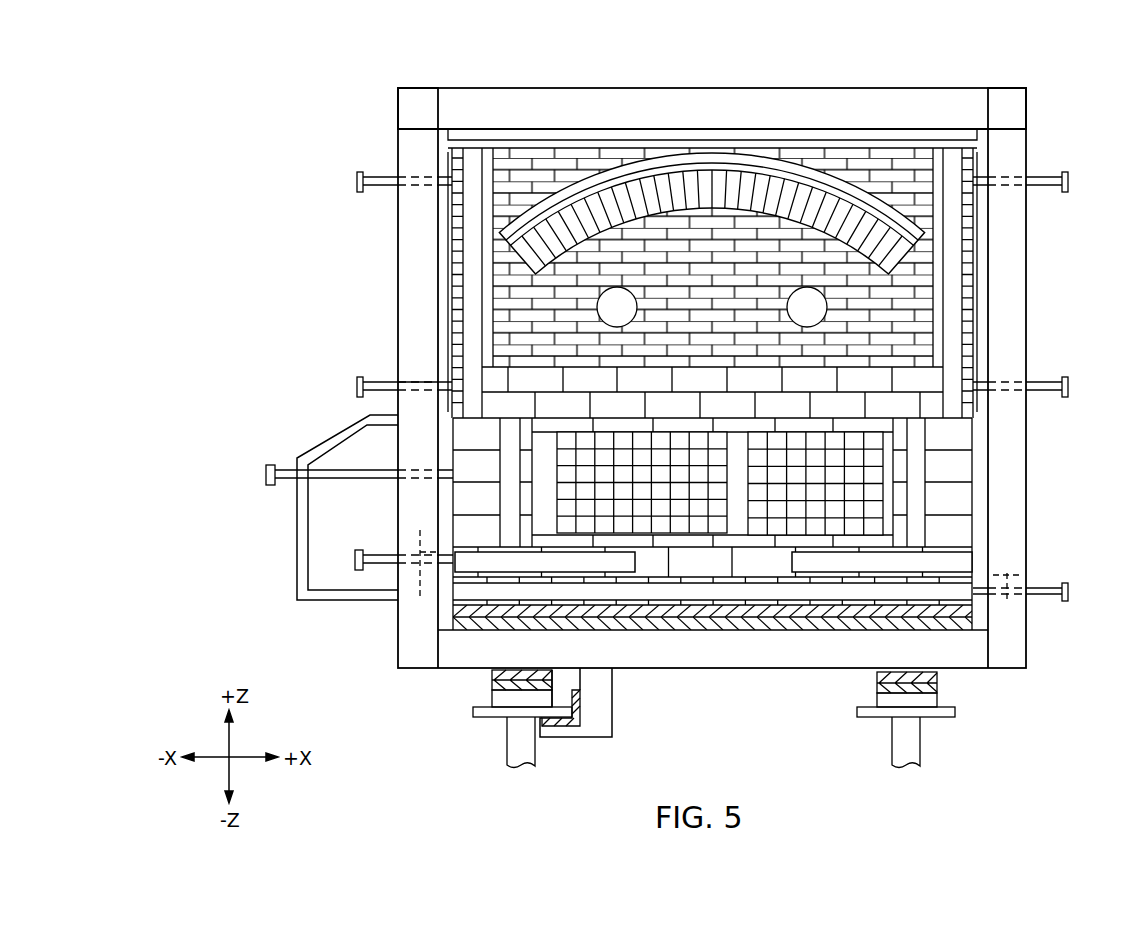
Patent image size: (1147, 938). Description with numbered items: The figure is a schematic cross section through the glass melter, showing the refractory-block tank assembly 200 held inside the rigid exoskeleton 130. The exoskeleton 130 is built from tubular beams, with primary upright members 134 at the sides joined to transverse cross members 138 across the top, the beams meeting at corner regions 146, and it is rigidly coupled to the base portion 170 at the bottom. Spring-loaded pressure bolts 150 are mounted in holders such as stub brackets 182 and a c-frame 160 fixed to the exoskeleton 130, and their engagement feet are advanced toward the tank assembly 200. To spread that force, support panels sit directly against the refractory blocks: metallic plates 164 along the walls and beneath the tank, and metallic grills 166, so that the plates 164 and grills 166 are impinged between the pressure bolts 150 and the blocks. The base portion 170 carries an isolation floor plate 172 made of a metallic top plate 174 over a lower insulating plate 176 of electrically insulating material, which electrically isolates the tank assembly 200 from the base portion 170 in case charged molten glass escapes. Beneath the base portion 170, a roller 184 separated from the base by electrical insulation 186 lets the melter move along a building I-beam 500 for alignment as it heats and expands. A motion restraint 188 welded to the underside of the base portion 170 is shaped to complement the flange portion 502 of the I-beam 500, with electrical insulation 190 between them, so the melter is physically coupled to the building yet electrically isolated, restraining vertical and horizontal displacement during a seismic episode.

The rigid exoskeleton 130 is at (1040, 110).
The primary upright member 134 is at (398, 298).
The transverse cross member 138 is at (597, 86).
The corner member 146 is at (398, 100).
The pressure bolt 150 is at (1070, 178).
The c-frame 160 is at (322, 422).
The plate 164 is at (462, 230).
The grill 166 is at (557, 457).
The base portion 170 is at (380, 652).
The isolation floor plate 172 is at (453, 608).
The metallic top plate 174 is at (973, 607).
The lower insulating plate 176 is at (973, 621).
The stub bracket 182 is at (1035, 566).
The roller 184 is at (937, 704).
The electrical insulation 186 is at (877, 683).
The motion restraint 188 is at (622, 718).
The electrical insulation 190 is at (575, 703).
The tank assembly 200 is at (793, 146).
The I-beam 500 is at (555, 748).
The flange portion 502 is at (480, 718).